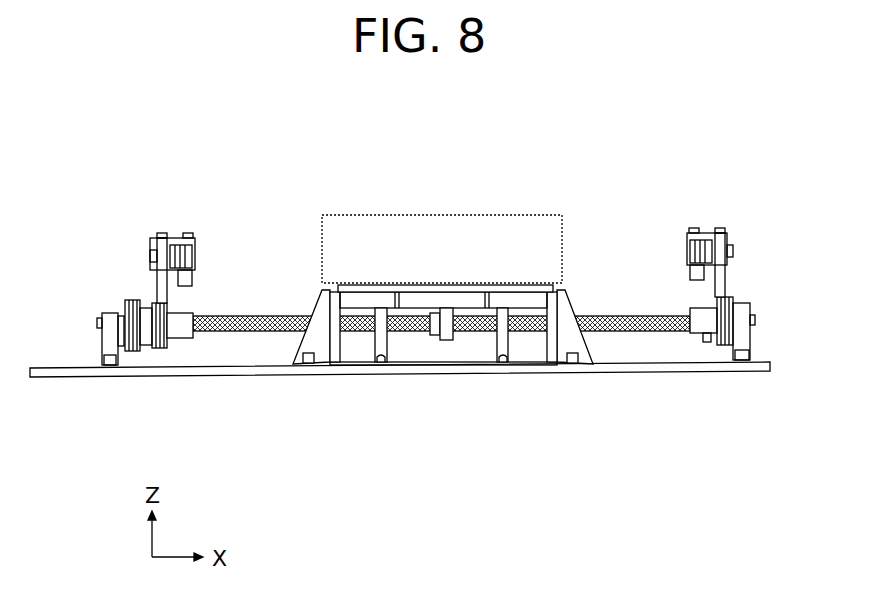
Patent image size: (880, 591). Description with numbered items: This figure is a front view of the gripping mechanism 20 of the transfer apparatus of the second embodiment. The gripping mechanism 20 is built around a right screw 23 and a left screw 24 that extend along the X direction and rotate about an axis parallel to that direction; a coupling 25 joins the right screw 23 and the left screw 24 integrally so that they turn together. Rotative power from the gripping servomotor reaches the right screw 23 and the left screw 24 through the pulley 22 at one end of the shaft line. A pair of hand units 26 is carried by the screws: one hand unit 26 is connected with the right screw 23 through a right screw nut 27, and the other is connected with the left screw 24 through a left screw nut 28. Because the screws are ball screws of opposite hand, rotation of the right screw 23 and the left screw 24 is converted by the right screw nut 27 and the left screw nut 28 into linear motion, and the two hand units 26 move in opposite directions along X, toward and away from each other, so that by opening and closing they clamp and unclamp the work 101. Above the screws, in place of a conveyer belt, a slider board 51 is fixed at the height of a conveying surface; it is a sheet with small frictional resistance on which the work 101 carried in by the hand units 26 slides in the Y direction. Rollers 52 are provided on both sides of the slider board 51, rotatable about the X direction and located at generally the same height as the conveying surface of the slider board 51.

The gripping mechanism 20 is at (240, 175).
The pulley 22 is at (143, 345).
The right screw 23 is at (272, 317).
The left screw 24 is at (605, 314).
The coupling 25 is at (445, 340).
The hand unit 26 is at (190, 258).
The right screw nut 27 is at (182, 338).
The left screw nut 28 is at (703, 333).
The slider board 51 is at (517, 283).
The roller 52 is at (355, 298).
The work 101 is at (452, 213).